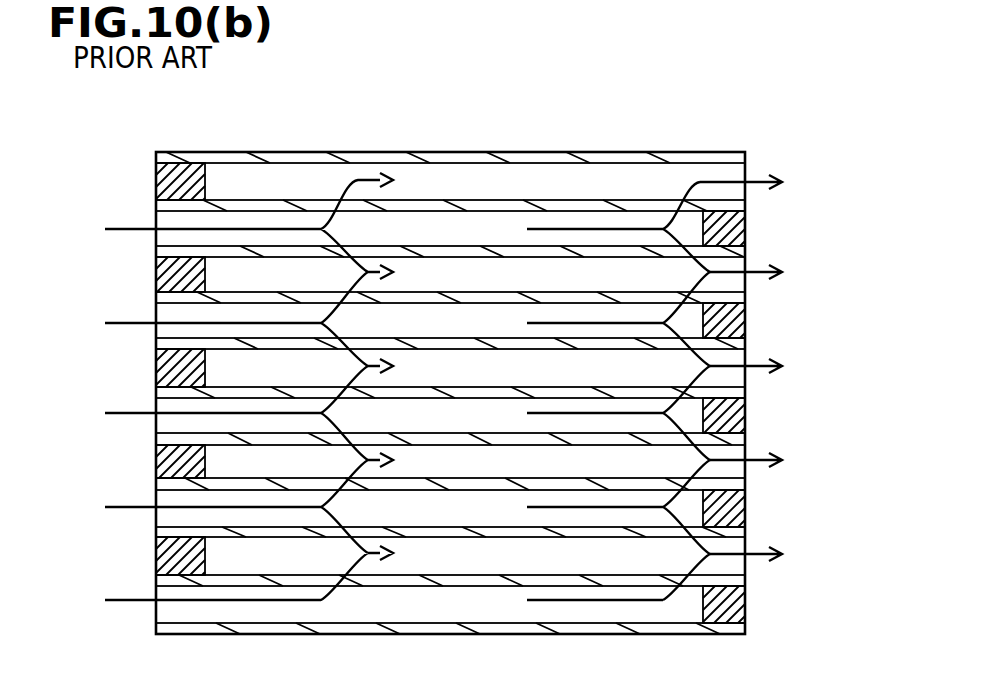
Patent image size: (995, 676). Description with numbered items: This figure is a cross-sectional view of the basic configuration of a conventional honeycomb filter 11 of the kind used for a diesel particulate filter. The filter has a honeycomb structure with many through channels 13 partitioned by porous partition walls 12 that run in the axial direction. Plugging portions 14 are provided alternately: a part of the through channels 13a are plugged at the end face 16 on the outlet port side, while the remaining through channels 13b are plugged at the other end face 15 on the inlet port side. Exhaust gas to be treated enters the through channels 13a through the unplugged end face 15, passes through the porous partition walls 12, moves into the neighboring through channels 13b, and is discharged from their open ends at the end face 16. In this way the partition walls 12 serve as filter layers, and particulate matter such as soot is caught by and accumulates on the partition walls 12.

The heat exchanger 11 is at (680, 135).
The porous partition wall 12 is at (607, 205).
The through channel 13 is at (527, 101).
The through channel 13a is at (414, 222).
The through channel 13b is at (490, 183).
The plugging portion 14 is at (745, 230).
The end face 15 is at (157, 404).
The end face 16 is at (745, 378).